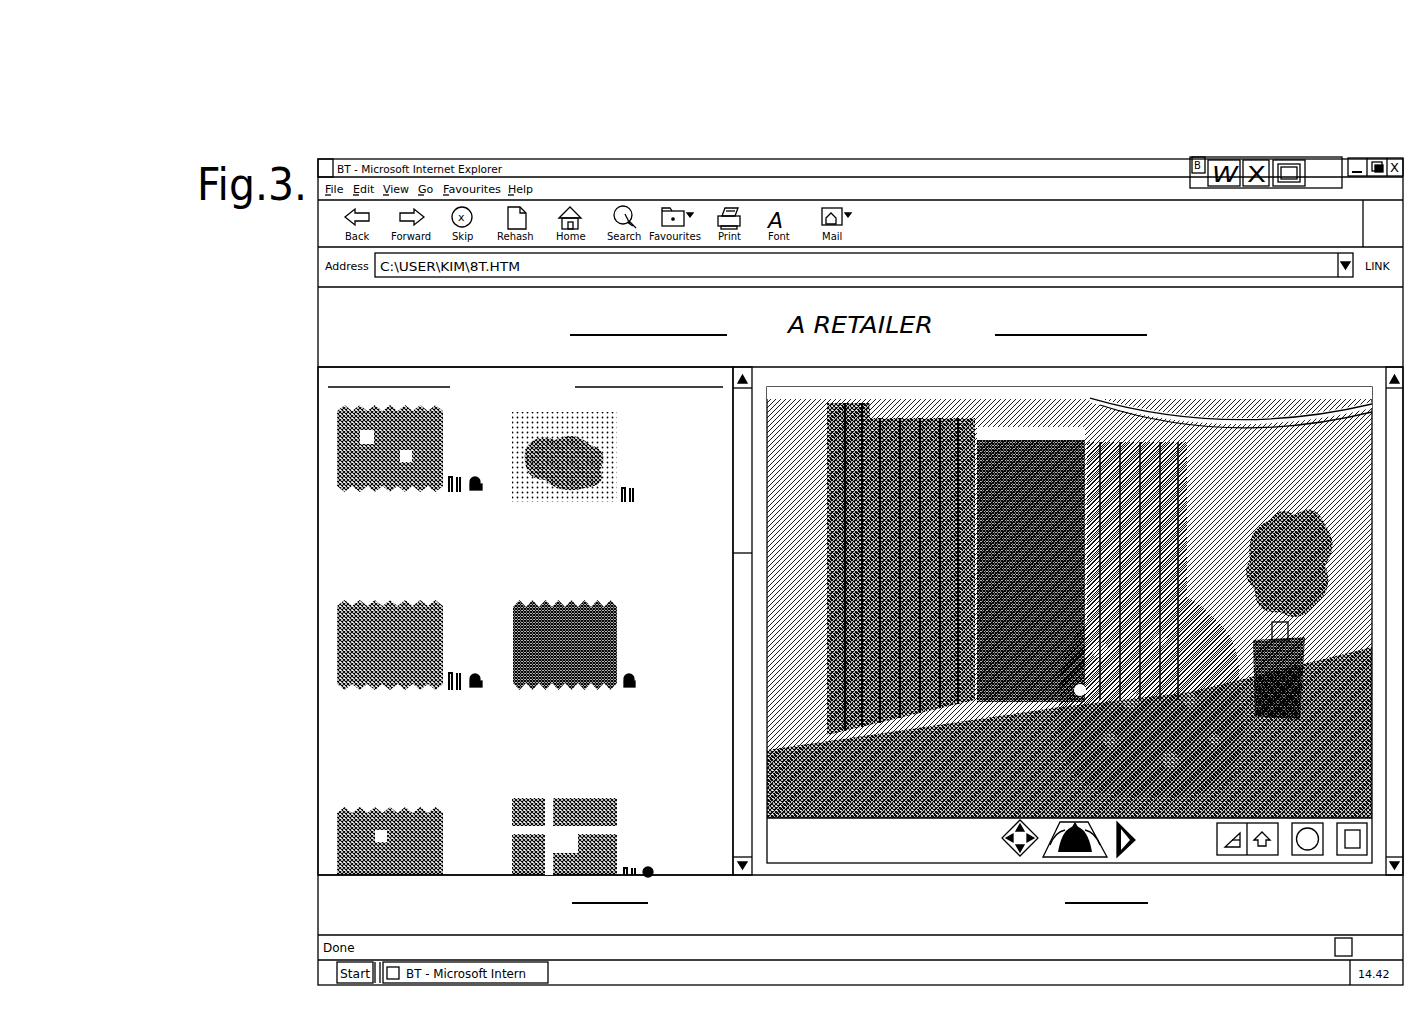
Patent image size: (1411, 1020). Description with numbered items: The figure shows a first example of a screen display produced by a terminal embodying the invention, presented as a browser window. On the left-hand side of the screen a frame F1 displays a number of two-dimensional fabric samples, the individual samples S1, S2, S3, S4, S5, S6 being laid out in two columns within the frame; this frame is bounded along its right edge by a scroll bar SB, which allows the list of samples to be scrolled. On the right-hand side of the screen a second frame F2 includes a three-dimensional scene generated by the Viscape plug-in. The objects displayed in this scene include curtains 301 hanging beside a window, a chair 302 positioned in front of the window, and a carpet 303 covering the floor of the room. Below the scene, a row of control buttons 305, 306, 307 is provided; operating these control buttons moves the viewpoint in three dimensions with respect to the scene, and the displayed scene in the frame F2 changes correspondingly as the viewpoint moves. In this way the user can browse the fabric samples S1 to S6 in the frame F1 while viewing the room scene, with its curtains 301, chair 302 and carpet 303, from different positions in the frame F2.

The 2D fabric sample S1 is at (443, 432).
The 2D fabric sample S2 is at (603, 438).
The 2D fabric sample S3 is at (443, 622).
The 2D fabric sample S4 is at (617, 622).
The 2D fabric sample S5 is at (443, 832).
The 2D fabric sample S6 is at (617, 814).
The frame F1 is at (713, 488).
The frame F2 is at (1088, 378).
The scroll bar SB is at (746, 654).
The curtains 301 is at (1158, 442).
The chair 302 is at (1198, 622).
The carpet 303 is at (940, 785).
The control button 305 is at (1003, 838).
The control button 306 is at (1075, 857).
The control button 307 is at (1137, 839).